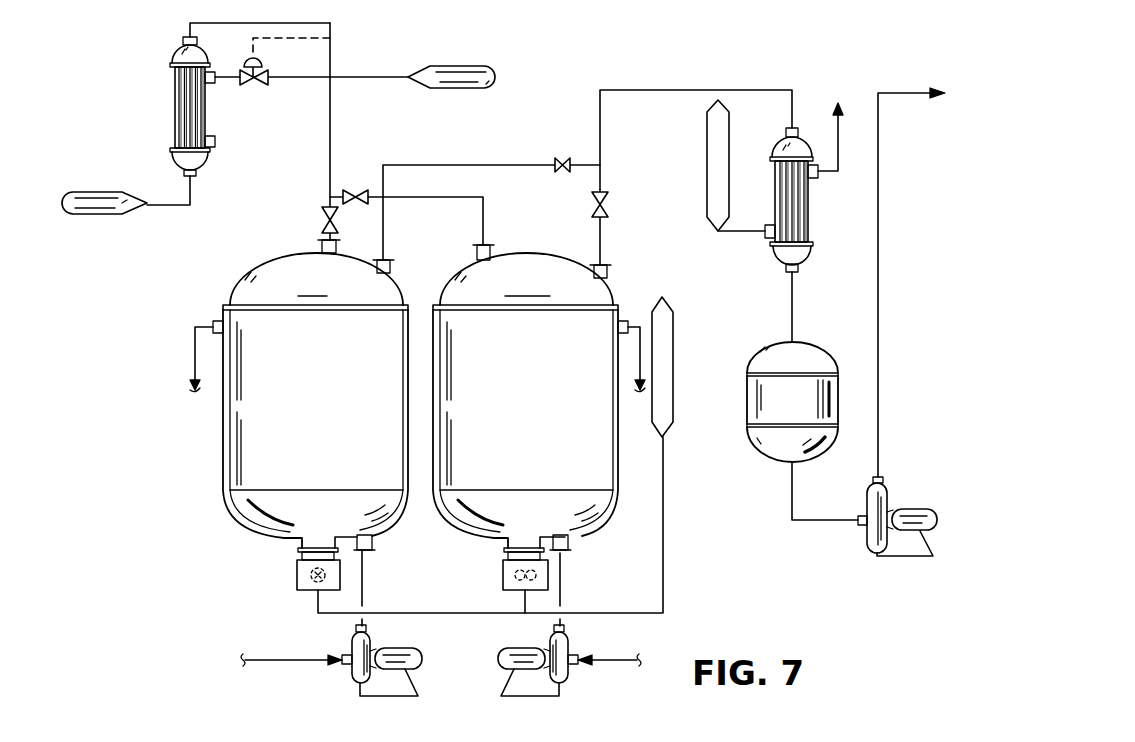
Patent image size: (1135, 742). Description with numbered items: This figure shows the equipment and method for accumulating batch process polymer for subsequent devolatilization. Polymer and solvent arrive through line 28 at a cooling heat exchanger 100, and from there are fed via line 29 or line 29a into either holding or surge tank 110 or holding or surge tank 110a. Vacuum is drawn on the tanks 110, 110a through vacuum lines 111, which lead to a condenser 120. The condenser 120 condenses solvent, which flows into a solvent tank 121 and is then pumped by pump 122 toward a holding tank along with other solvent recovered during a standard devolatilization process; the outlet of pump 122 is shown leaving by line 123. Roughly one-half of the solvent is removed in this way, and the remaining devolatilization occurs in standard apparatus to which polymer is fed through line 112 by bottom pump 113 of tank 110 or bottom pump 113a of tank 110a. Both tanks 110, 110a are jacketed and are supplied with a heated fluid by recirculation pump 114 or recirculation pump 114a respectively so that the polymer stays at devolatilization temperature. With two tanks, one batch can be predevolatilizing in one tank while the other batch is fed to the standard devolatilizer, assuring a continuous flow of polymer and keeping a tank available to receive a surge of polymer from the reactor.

The line 28 is at (196, 190).
The line 29 is at (330, 128).
The line 29a is at (453, 198).
The cooling heat exchanger 100 is at (208, 116).
The holding or surge tank 110 is at (299, 395).
The holding or surge tank 110a is at (539, 397).
The vacuum line 111 is at (500, 165).
The line 112 is at (490, 613).
The bottom pump 113 is at (297, 583).
The bottom pump 113a is at (504, 588).
The recirculation pump 114 is at (405, 697).
The recirculation pump 114a is at (501, 697).
The condenser 120 is at (828, 199).
The solvent tank 121 is at (747, 420).
The pump 122 is at (930, 510).
The outlet line 123 is at (878, 418).